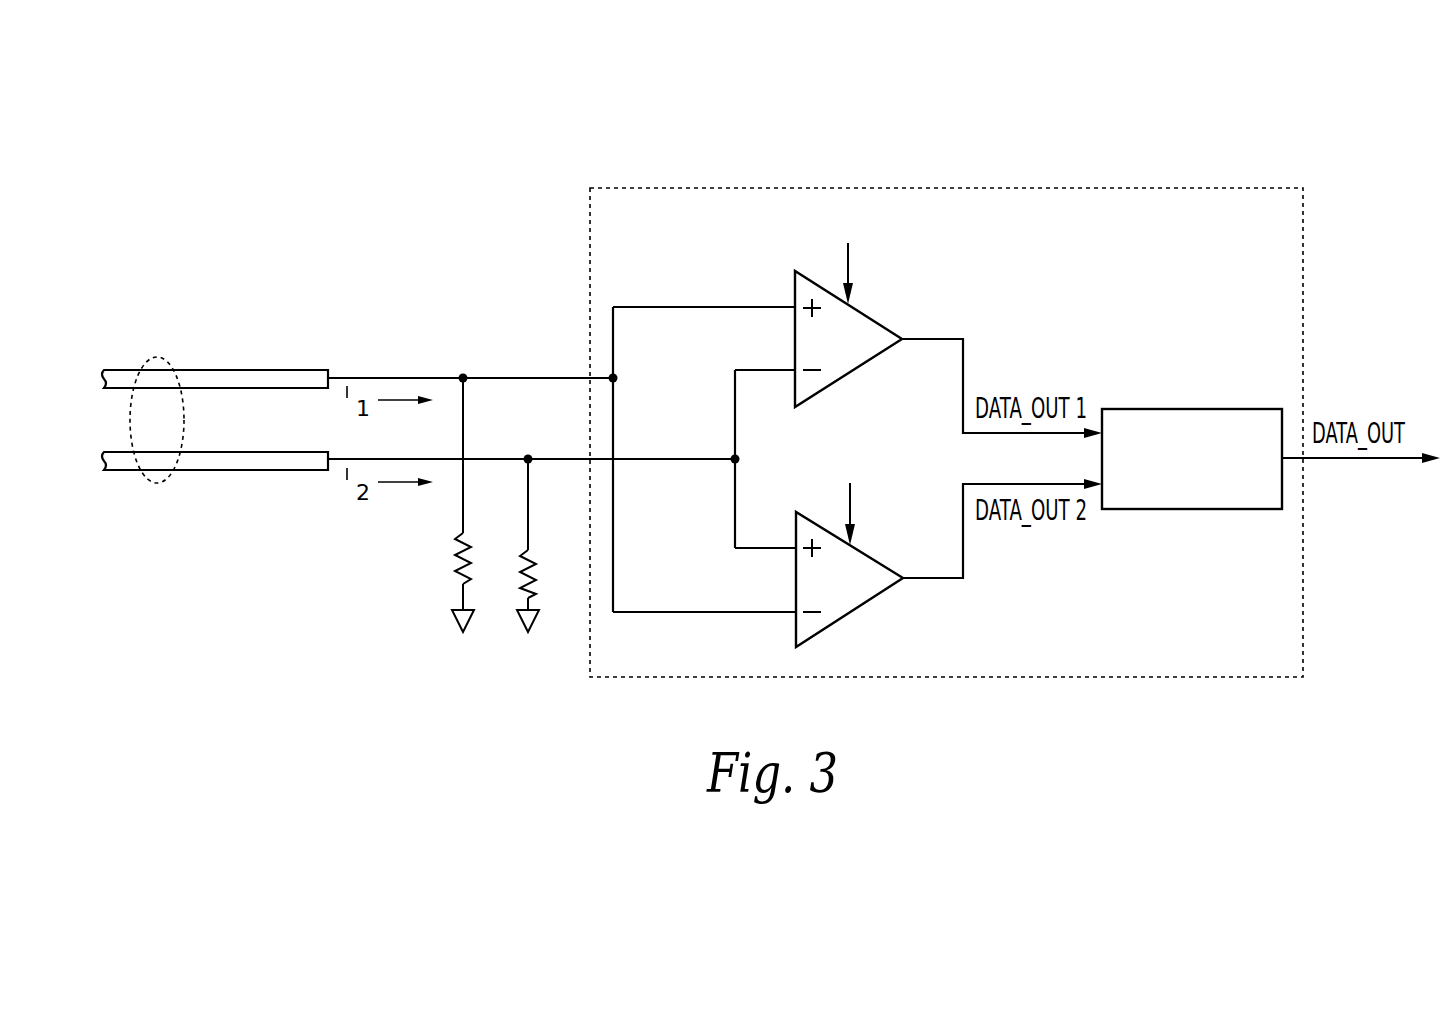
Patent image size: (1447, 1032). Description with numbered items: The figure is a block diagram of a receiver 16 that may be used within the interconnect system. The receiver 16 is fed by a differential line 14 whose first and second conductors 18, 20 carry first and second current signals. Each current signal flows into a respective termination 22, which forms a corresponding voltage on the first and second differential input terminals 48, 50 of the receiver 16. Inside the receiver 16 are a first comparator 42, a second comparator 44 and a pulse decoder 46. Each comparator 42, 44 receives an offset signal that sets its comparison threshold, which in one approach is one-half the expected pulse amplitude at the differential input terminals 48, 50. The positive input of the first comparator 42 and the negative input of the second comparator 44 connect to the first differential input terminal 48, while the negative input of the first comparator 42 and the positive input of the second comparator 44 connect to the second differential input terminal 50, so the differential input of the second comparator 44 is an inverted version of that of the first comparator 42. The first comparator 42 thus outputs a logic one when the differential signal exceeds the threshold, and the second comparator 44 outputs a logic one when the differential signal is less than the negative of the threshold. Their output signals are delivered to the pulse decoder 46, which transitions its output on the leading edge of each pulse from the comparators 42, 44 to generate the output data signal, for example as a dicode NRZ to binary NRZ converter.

The differential line 14 is at (159, 357).
The receiver 16 is at (944, 187).
The first conductor 18 is at (262, 370).
The second conductor 20 is at (262, 470).
The terminations 22 is at (459, 570).
The first comparator 42 is at (865, 311).
The second comparator 44 is at (868, 553).
The pulse decoder 46 is at (1191, 408).
The first differential input terminal 48 is at (619, 380).
The second differential input terminal 50 is at (740, 456).